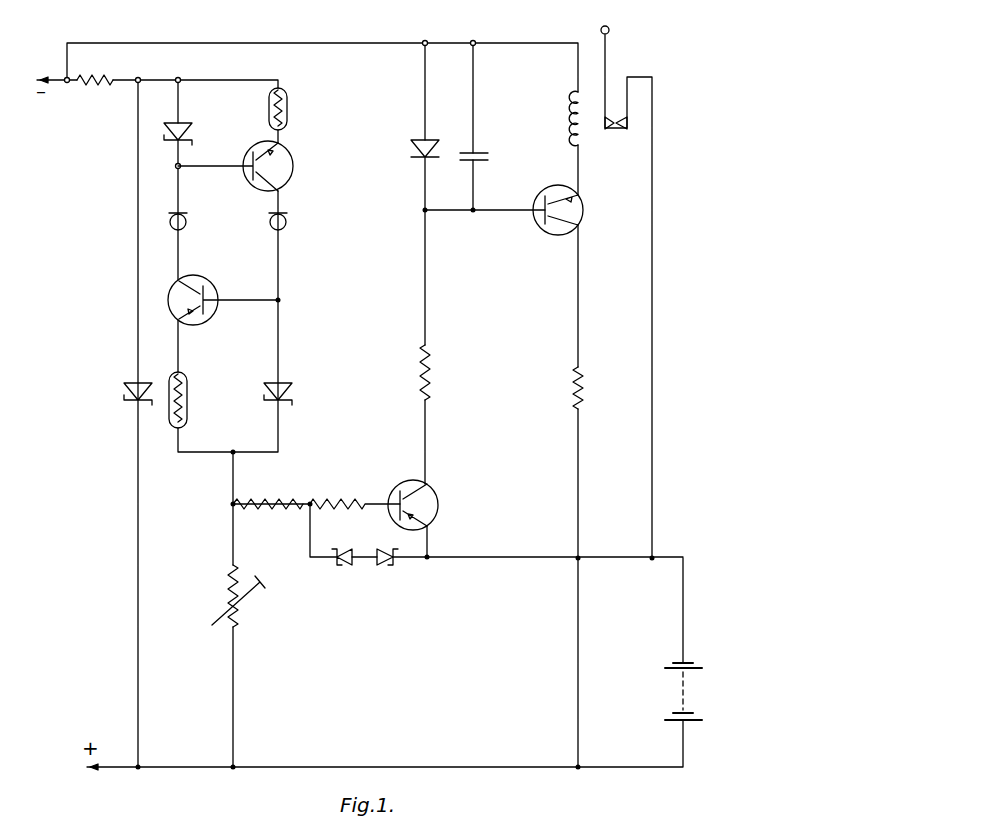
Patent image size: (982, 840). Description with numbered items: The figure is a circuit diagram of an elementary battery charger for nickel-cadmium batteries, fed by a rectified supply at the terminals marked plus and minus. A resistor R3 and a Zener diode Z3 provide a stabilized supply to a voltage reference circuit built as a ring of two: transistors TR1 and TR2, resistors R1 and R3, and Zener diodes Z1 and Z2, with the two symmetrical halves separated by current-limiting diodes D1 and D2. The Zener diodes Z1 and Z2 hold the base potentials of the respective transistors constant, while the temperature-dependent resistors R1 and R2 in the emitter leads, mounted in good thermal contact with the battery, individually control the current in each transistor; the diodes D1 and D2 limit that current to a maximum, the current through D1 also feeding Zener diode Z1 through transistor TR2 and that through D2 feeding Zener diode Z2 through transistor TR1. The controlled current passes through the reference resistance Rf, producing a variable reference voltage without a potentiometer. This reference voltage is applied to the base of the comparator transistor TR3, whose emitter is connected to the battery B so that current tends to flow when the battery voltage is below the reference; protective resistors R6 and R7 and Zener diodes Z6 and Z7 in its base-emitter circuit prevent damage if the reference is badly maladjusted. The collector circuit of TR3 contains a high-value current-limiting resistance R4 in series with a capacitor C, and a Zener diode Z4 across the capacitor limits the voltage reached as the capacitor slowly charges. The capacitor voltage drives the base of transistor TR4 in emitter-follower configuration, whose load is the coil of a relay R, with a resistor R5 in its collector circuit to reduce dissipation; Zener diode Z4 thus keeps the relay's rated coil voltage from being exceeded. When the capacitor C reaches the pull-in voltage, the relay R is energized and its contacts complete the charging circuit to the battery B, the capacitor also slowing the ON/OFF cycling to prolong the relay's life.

The resistor R3 is at (95, 67).
The Zener diode Z1 is at (191, 125).
The temperature-dependent resistor R1 is at (293, 109).
The transistor TR1 is at (294, 170).
The current-limiting diode D1 is at (187, 222).
The current-limiting diode D2 is at (287, 222).
The transistor TR2 is at (212, 280).
The Zener diode Z3 is at (117, 393).
The temperature-dependent resistor R2 is at (194, 400).
The Zener diode Z2 is at (295, 396).
The resistor R6 is at (268, 491).
The resistor R7 is at (355, 491).
The Zener diode Z6 is at (345, 543).
The Zener diode Z7 is at (401, 569).
The comparator transistor TR3 is at (438, 505).
The reference resistance Rf is at (223, 596).
The Zener diode Z4 is at (434, 134).
The capacitor C is at (481, 145).
The transistor TR4 is at (583, 210).
The relay R is at (598, 123).
The high-value resistance R4 is at (443, 372).
The resistor R5 is at (597, 388).
The battery B is at (670, 691).